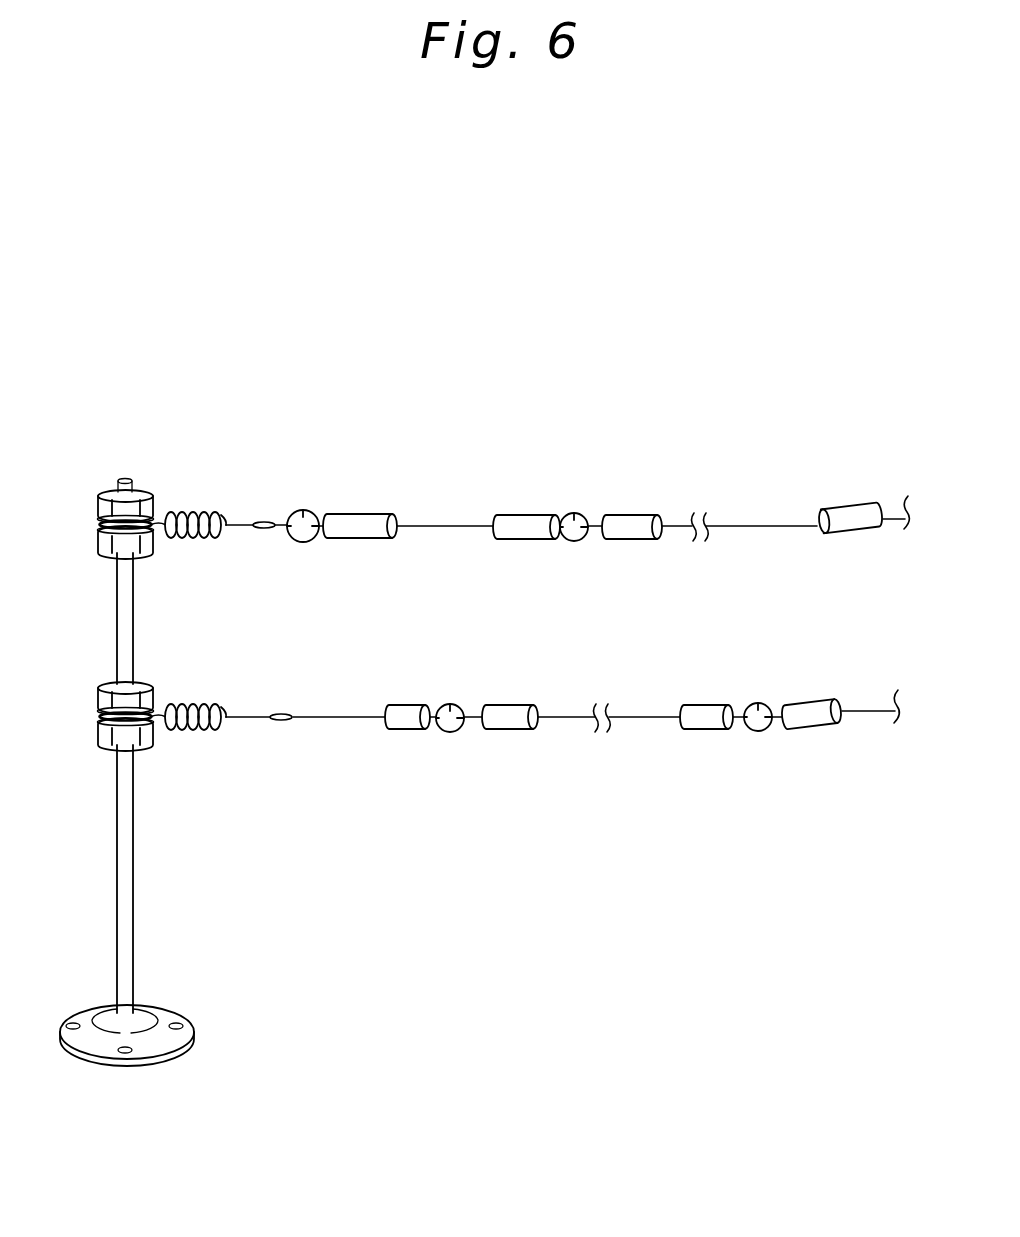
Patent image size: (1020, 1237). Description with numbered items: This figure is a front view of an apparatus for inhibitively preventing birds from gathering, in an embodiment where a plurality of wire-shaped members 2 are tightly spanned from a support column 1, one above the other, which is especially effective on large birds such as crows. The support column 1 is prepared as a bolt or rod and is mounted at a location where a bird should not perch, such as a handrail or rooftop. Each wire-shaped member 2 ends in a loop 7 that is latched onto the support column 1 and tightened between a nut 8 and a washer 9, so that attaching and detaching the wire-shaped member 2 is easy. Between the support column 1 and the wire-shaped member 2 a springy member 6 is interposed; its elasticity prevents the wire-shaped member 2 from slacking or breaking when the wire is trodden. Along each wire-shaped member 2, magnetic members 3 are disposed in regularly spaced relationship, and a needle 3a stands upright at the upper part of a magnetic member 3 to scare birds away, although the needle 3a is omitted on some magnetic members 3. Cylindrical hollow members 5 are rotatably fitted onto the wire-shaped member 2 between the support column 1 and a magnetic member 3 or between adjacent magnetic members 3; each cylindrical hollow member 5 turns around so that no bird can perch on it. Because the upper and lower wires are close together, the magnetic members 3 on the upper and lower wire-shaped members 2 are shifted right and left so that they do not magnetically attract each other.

The support column 1 is at (128, 655).
The wire-shaped member 2 is at (452, 527).
The magnetic member 3 is at (308, 540).
The needle 3a is at (303, 507).
The cylindrical hollow member 5 is at (385, 512).
The springy member 6 is at (200, 514).
The loop 7 is at (99, 527).
The nut 8 is at (112, 494).
The washer 9 is at (102, 516).